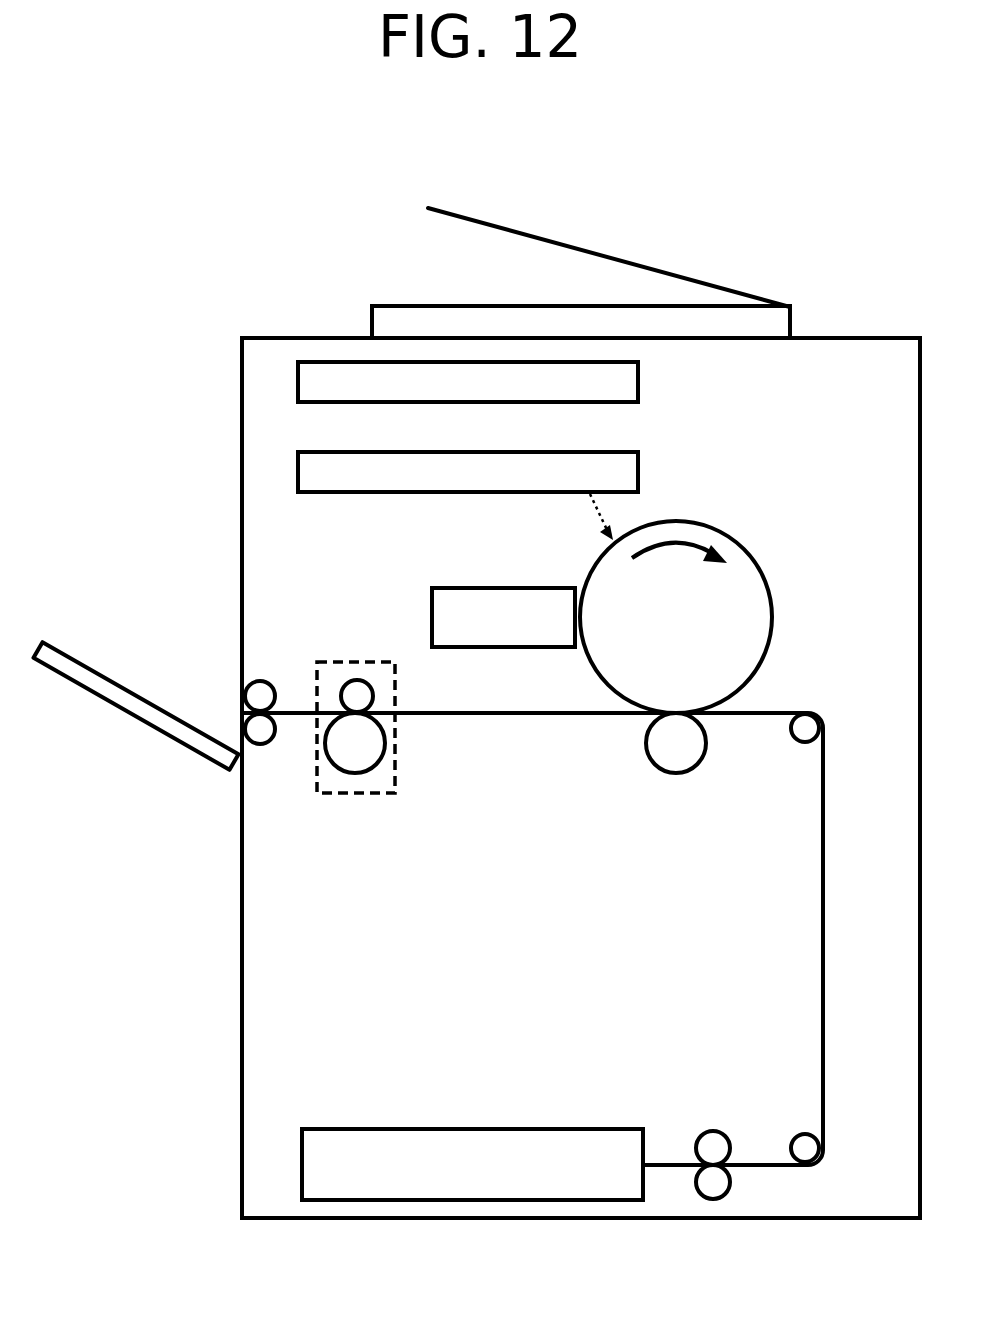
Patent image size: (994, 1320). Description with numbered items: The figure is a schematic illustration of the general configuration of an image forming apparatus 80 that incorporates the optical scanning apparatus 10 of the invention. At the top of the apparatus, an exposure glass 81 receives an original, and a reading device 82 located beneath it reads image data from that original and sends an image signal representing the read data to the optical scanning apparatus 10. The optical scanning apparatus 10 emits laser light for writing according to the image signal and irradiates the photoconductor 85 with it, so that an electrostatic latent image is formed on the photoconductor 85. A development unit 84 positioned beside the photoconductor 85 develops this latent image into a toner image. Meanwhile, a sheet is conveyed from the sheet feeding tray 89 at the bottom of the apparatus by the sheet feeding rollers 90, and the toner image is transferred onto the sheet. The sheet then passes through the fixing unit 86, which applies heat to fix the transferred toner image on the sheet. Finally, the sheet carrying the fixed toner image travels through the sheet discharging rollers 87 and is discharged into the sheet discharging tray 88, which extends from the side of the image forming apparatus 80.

The image forming apparatus 80 is at (226, 309).
The exposure glass 81 is at (790, 322).
The reading device 82 is at (640, 385).
The optical scanning apparatus 10 is at (640, 473).
The development unit 84 is at (452, 588).
The photoconductor 85 is at (752, 558).
The fixing unit 86 is at (370, 793).
The sheet discharging rollers 87 is at (266, 681).
The sheet discharging tray 88 is at (130, 715).
The sheet feeding tray 89 is at (600, 1130).
The sheet feeding rollers 90 is at (735, 1172).